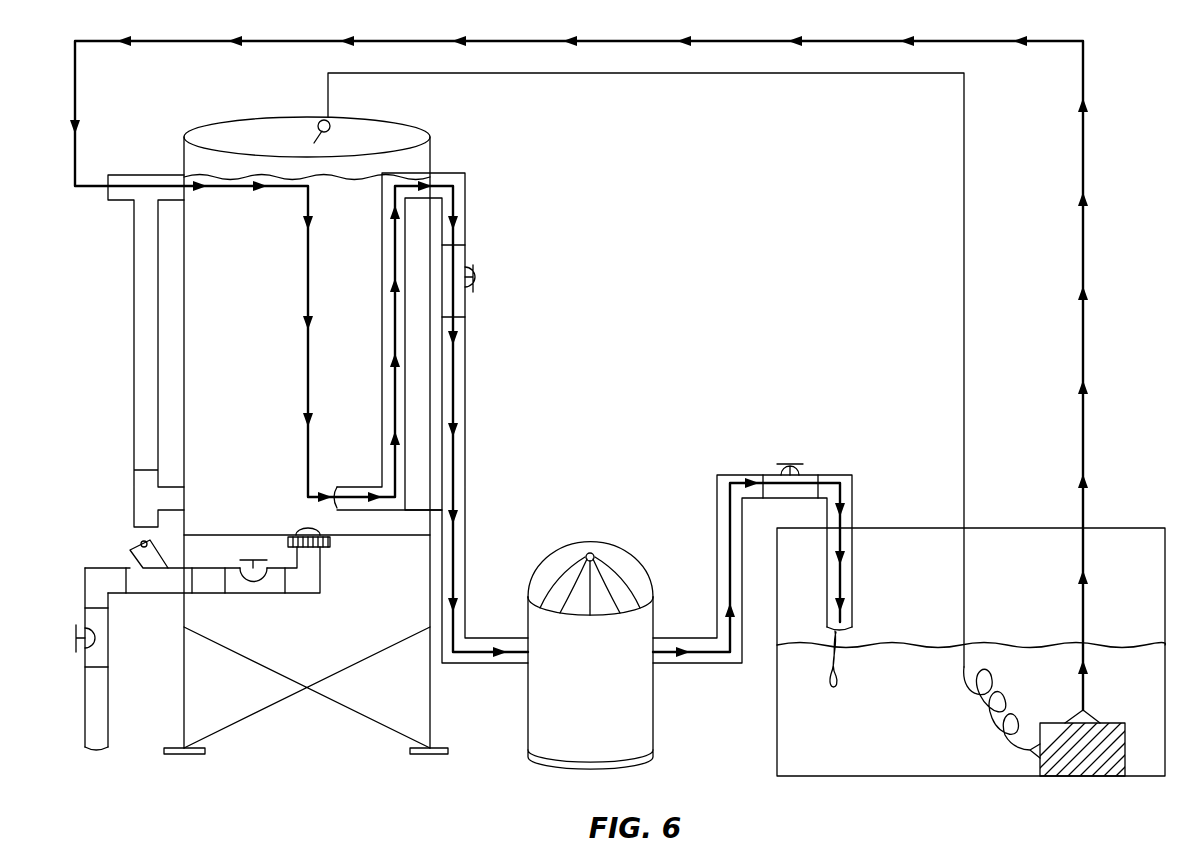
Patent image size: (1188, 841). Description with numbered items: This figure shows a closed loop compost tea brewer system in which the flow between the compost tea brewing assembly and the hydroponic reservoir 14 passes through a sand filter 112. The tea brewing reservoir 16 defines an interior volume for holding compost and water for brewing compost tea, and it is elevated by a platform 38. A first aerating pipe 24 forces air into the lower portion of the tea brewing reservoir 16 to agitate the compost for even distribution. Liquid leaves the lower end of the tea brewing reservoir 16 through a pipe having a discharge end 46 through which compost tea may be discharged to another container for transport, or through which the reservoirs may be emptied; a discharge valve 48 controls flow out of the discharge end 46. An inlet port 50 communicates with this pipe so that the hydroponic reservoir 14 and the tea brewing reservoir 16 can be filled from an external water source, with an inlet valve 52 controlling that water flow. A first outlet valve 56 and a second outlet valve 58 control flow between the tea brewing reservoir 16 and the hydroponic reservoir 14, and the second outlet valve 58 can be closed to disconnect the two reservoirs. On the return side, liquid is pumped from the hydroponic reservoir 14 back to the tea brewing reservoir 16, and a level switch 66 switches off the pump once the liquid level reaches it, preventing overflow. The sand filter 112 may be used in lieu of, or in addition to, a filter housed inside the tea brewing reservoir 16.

The hydroponic reservoir 14 is at (997, 528).
The tea brewing reservoir 16 is at (184, 423).
The first aerating pipe 24 is at (134, 334).
The platform 38 is at (432, 718).
The discharge end 46 is at (100, 752).
The discharge valve 48 is at (108, 643).
The inlet port 50 is at (140, 546).
The inlet valve 52 is at (253, 595).
The first outlet valve 56 is at (467, 258).
The second outlet valve 58 is at (808, 473).
The level switch 66 is at (318, 127).
The sand filter 112 is at (590, 656).